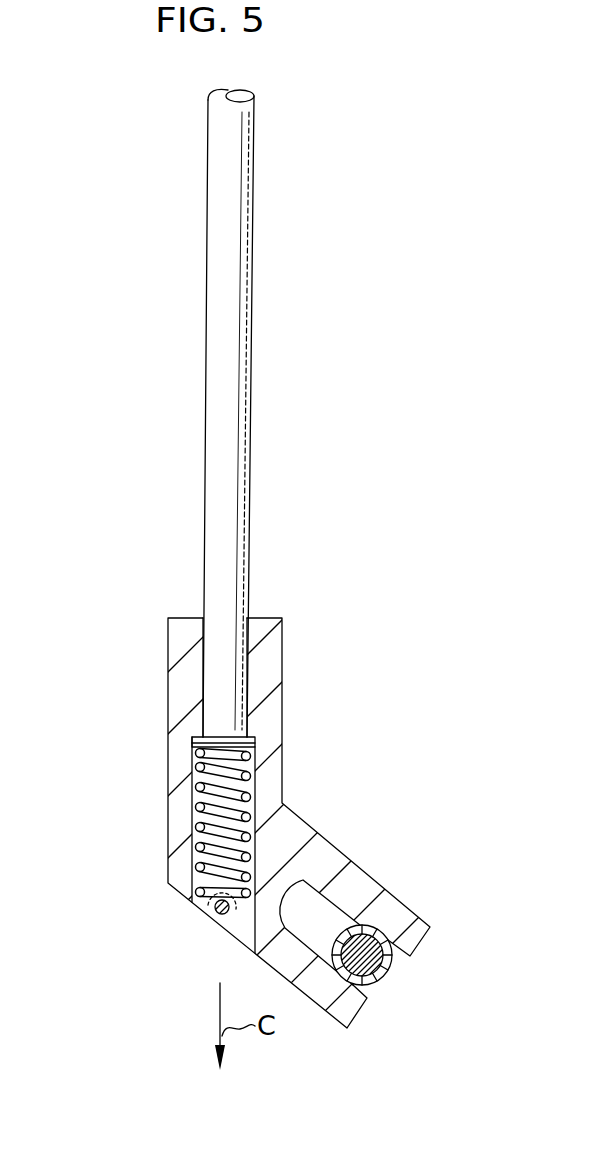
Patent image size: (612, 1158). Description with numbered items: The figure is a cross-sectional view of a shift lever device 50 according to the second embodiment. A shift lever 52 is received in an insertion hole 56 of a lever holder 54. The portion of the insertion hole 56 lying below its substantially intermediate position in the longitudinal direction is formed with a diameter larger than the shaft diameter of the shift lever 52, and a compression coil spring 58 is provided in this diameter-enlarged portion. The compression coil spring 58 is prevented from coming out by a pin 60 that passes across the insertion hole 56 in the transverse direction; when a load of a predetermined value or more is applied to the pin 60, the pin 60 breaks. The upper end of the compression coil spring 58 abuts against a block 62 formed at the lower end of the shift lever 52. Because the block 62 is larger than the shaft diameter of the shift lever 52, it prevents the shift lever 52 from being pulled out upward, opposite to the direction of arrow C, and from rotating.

The shift lever device 50 is at (382, 413).
The shift lever 52 is at (217, 362).
The lever holder 54 is at (180, 692).
The insertion hole 56 is at (203, 707).
The compression coil spring 58 is at (195, 857).
The pin 60 is at (214, 916).
The block 62 is at (255, 741).